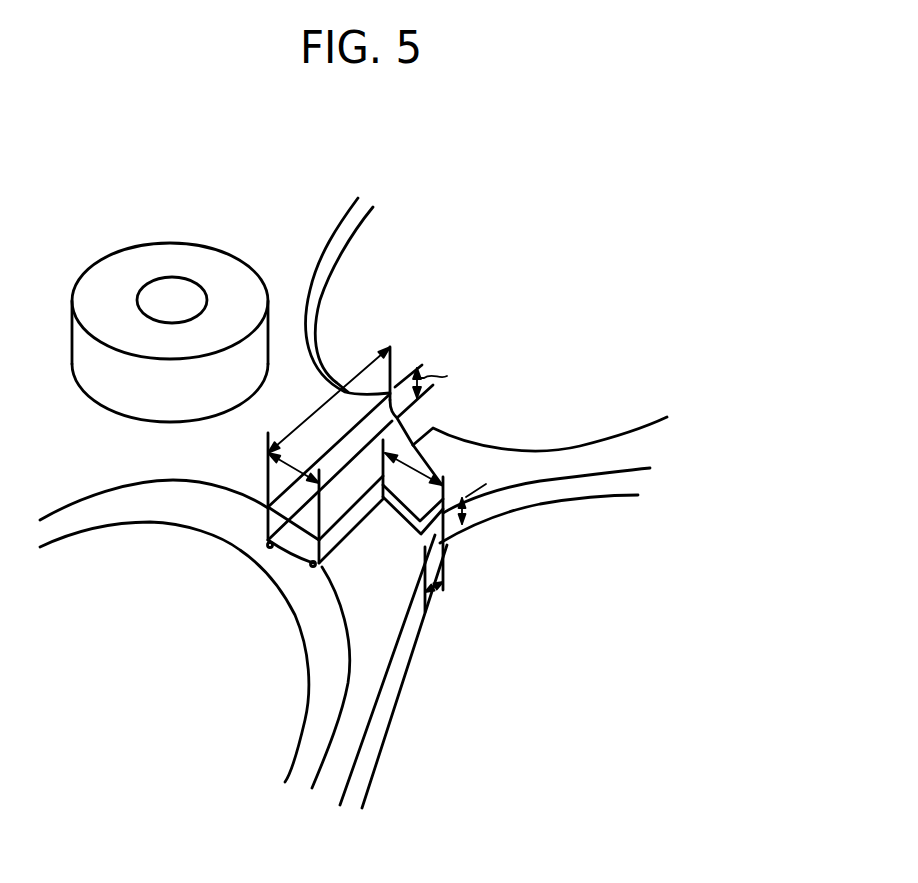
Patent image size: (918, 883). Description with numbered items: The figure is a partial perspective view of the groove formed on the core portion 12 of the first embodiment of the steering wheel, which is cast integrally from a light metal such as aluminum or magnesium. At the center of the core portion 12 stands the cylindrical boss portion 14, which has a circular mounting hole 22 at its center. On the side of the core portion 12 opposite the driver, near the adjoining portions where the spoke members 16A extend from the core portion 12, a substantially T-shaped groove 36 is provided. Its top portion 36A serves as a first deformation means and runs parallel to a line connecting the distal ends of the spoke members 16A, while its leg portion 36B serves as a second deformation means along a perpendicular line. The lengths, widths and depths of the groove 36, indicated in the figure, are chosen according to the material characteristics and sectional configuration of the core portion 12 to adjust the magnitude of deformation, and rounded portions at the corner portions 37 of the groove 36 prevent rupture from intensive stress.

The core portion 12 is at (130, 470).
The boss portion 14 is at (221, 270).
The spoke members 16A is at (593, 462).
The mounting hole 22 is at (168, 293).
The T-shaped groove 36 is at (437, 343).
The top portion of the T-shaped groove 36A is at (273, 560).
The leg portion of the T-shaped groove 36B is at (445, 560).
The corner portions 37 is at (402, 417).